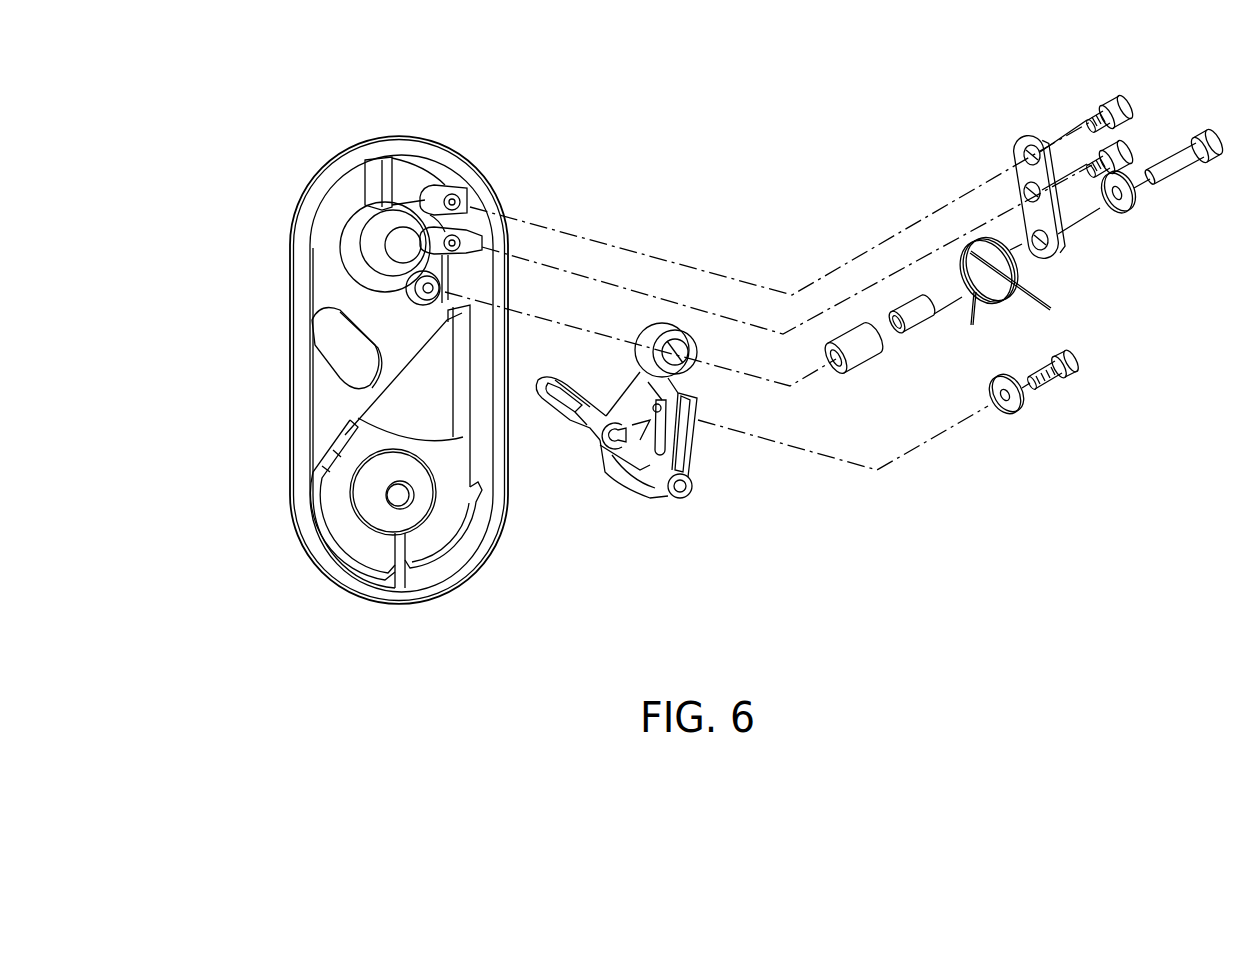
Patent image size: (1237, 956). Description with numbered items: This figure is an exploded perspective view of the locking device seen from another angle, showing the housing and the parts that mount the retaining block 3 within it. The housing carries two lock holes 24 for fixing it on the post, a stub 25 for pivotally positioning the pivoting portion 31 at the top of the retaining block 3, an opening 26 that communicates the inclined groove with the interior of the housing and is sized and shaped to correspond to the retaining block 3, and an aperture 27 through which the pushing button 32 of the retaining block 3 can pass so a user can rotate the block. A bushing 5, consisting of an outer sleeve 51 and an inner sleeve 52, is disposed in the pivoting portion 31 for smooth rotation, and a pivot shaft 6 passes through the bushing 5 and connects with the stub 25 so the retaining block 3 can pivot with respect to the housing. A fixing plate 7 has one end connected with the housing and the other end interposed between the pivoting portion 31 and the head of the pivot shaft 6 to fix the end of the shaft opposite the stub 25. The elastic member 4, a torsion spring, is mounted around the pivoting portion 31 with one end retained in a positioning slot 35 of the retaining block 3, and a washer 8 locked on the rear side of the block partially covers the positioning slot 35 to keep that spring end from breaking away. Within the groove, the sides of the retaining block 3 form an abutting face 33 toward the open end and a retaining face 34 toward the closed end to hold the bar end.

The retaining block 3 is at (663, 395).
The elastic member 4 is at (967, 248).
The bushing 5 is at (849, 248).
The pivot shaft 6 is at (1182, 157).
The fixing plate 7 is at (1017, 168).
The washer 8 is at (1013, 407).
The lock holes 24 is at (395, 245).
The stub 25 is at (437, 287).
The opening 26 is at (410, 406).
The aperture 27 is at (335, 346).
The pivoting portion 31 is at (658, 338).
The pushing button 32 is at (555, 428).
The abutting face 33 is at (695, 460).
The retaining face 34 is at (643, 500).
The positioning slot 35 is at (680, 422).
The outer sleeve 51 is at (843, 345).
The inner sleeve 52 is at (912, 310).